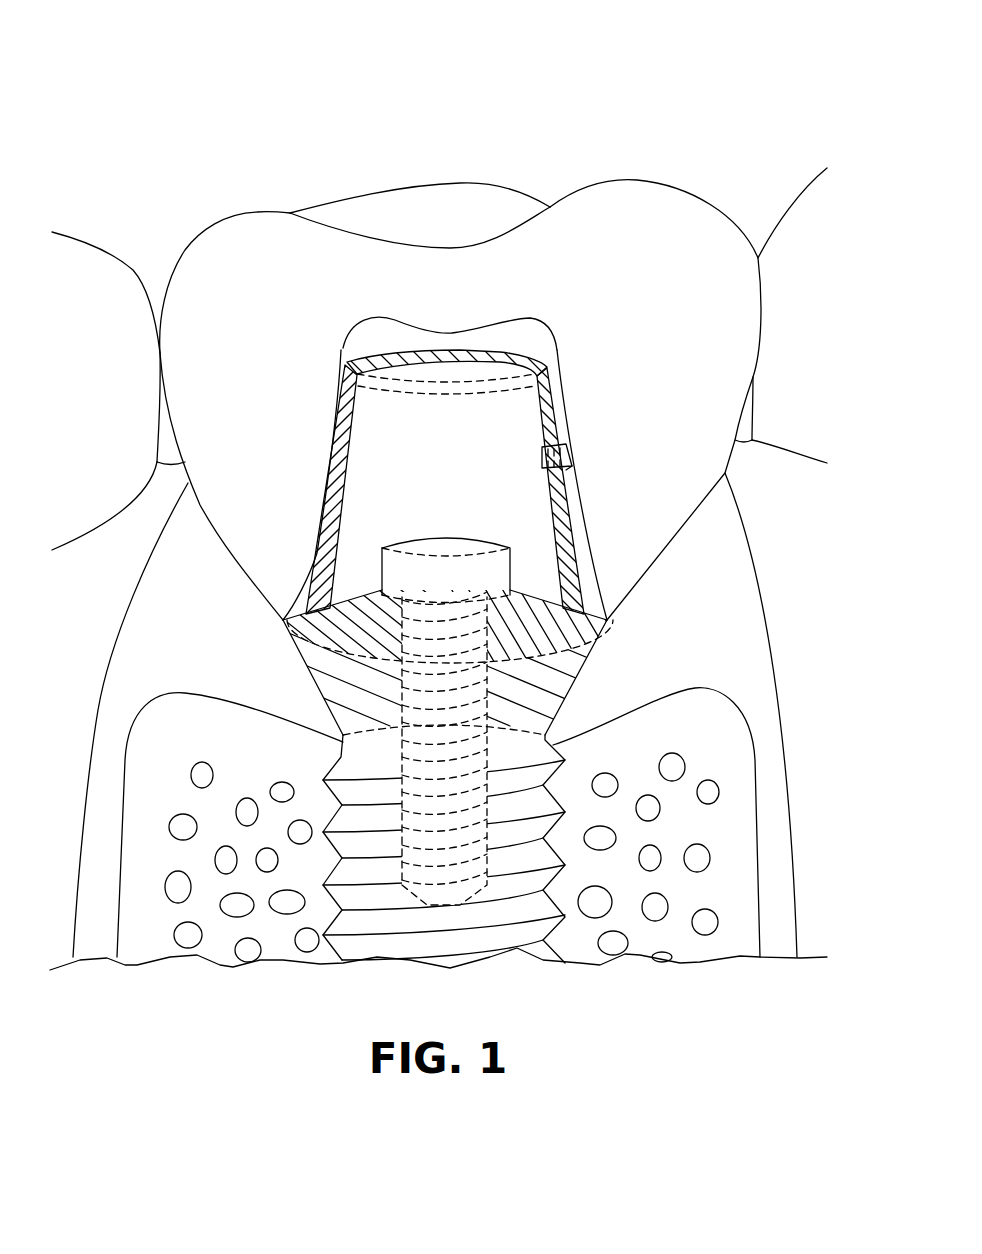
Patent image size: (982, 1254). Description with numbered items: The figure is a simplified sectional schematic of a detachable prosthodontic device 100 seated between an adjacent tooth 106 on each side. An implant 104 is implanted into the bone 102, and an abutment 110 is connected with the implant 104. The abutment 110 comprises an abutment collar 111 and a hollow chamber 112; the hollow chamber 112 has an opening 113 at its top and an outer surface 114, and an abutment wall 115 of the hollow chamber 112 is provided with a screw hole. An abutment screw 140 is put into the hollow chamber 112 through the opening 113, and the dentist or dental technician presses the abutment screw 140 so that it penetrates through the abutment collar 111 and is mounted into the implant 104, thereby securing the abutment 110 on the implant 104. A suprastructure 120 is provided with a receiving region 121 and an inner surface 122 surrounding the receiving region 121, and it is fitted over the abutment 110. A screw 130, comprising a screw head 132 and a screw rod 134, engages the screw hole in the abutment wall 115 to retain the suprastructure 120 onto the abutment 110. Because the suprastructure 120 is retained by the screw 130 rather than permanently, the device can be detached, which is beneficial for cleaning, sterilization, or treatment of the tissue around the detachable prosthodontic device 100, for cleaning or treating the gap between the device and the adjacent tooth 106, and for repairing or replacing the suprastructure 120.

The detachable prosthodontic device 100 is at (183, 70).
The bone 102 is at (667, 737).
The implant 104 is at (388, 920).
The adjacent tooth 106 is at (63, 303).
The abutment 110 is at (441, 439).
The abutment collar 111 is at (345, 680).
The hollow chamber 112 is at (410, 442).
The opening 113 is at (478, 370).
The outer surface 114 is at (320, 553).
The abutment wall 115 is at (553, 492).
The suprastructure 120 is at (617, 210).
The receiving region 121 is at (533, 345).
The inner surface 122 is at (347, 352).
The screw 130 is at (572, 472).
The screw head 132 is at (572, 455).
The screw rod 134 is at (542, 457).
The abutment screw 140 is at (430, 573).